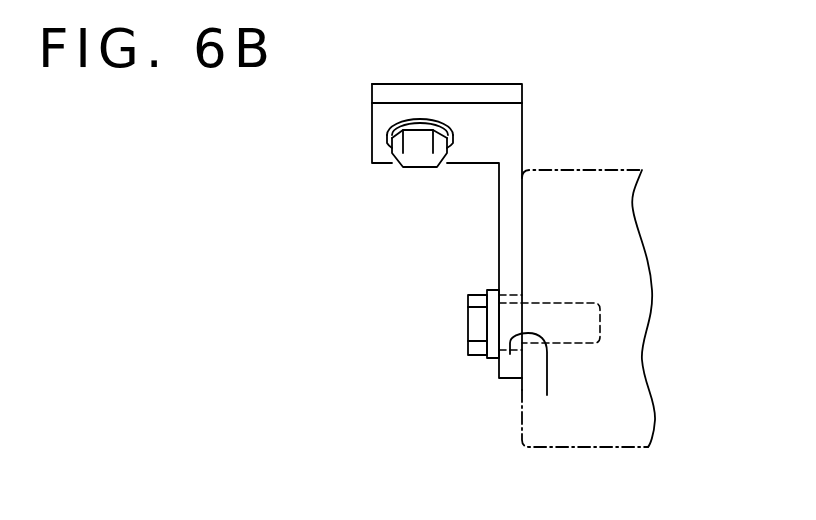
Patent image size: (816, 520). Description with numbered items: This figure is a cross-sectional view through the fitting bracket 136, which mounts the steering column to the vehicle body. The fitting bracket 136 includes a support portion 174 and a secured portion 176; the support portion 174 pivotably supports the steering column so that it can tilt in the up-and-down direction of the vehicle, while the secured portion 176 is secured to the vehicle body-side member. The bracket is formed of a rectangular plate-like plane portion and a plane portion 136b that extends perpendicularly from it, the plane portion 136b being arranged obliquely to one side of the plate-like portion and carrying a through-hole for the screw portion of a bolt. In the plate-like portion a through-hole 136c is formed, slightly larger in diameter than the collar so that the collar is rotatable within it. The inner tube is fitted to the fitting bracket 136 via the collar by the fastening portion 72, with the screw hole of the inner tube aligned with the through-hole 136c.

The fitting bracket 136 is at (522, 137).
The plane portion 136b is at (488, 84).
The through-hole 136c is at (547, 395).
The secured portion 176 is at (381, 152).
The support portion 174 is at (470, 285).
The fastening portion 72 is at (468, 324).